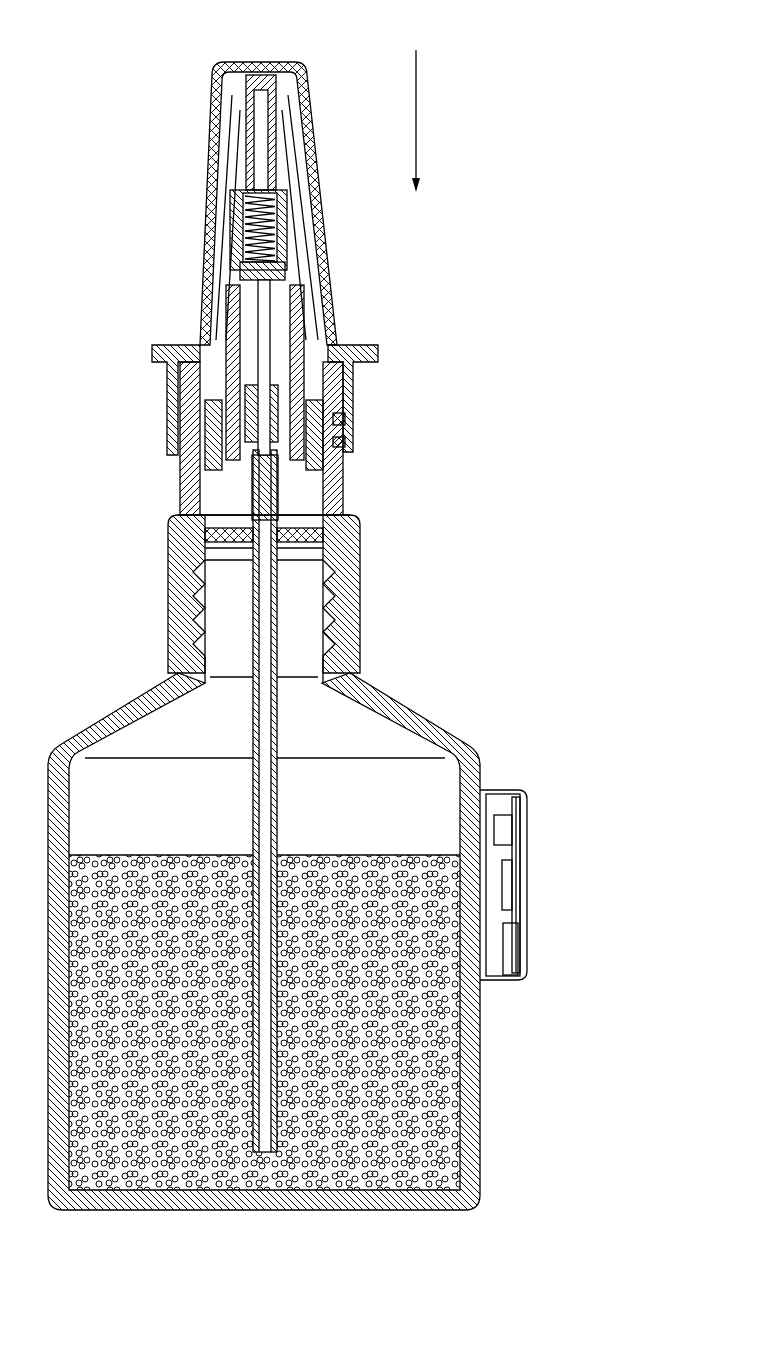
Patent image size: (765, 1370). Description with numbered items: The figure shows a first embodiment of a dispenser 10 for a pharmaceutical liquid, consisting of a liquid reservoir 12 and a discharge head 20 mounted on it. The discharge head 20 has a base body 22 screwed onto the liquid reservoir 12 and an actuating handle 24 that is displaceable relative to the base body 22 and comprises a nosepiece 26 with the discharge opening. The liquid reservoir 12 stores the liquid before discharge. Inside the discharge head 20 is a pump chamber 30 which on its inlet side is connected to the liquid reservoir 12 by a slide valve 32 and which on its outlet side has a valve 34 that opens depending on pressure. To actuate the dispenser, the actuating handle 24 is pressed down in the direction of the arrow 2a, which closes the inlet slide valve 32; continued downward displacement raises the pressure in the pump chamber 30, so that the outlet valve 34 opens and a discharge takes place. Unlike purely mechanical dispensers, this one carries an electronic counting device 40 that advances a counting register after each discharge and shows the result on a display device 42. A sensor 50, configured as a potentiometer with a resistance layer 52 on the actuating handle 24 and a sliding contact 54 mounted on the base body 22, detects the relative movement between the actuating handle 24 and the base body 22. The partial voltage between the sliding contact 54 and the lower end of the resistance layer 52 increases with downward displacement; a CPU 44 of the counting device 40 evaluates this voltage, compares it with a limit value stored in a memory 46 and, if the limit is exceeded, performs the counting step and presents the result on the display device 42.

The dispenser 10 is at (514, 427).
The liquid reservoir 12 is at (410, 692).
The discharge head 20 is at (370, 288).
The base body 22 is at (172, 556).
The actuating handle 24 is at (168, 349).
The nosepiece 26 is at (228, 246).
The pump chamber 30 is at (242, 399).
The slide valve 32 is at (257, 420).
The valve 34 is at (249, 120).
The electronic counting device 40 is at (544, 942).
The display device 42 is at (527, 848).
The CPU 44 is at (507, 888).
The memory 46 is at (515, 933).
The sensor 50 is at (352, 400).
The resistance layer 52 is at (345, 418).
The sliding contact 54 is at (348, 440).
The arrow 2a is at (416, 115).